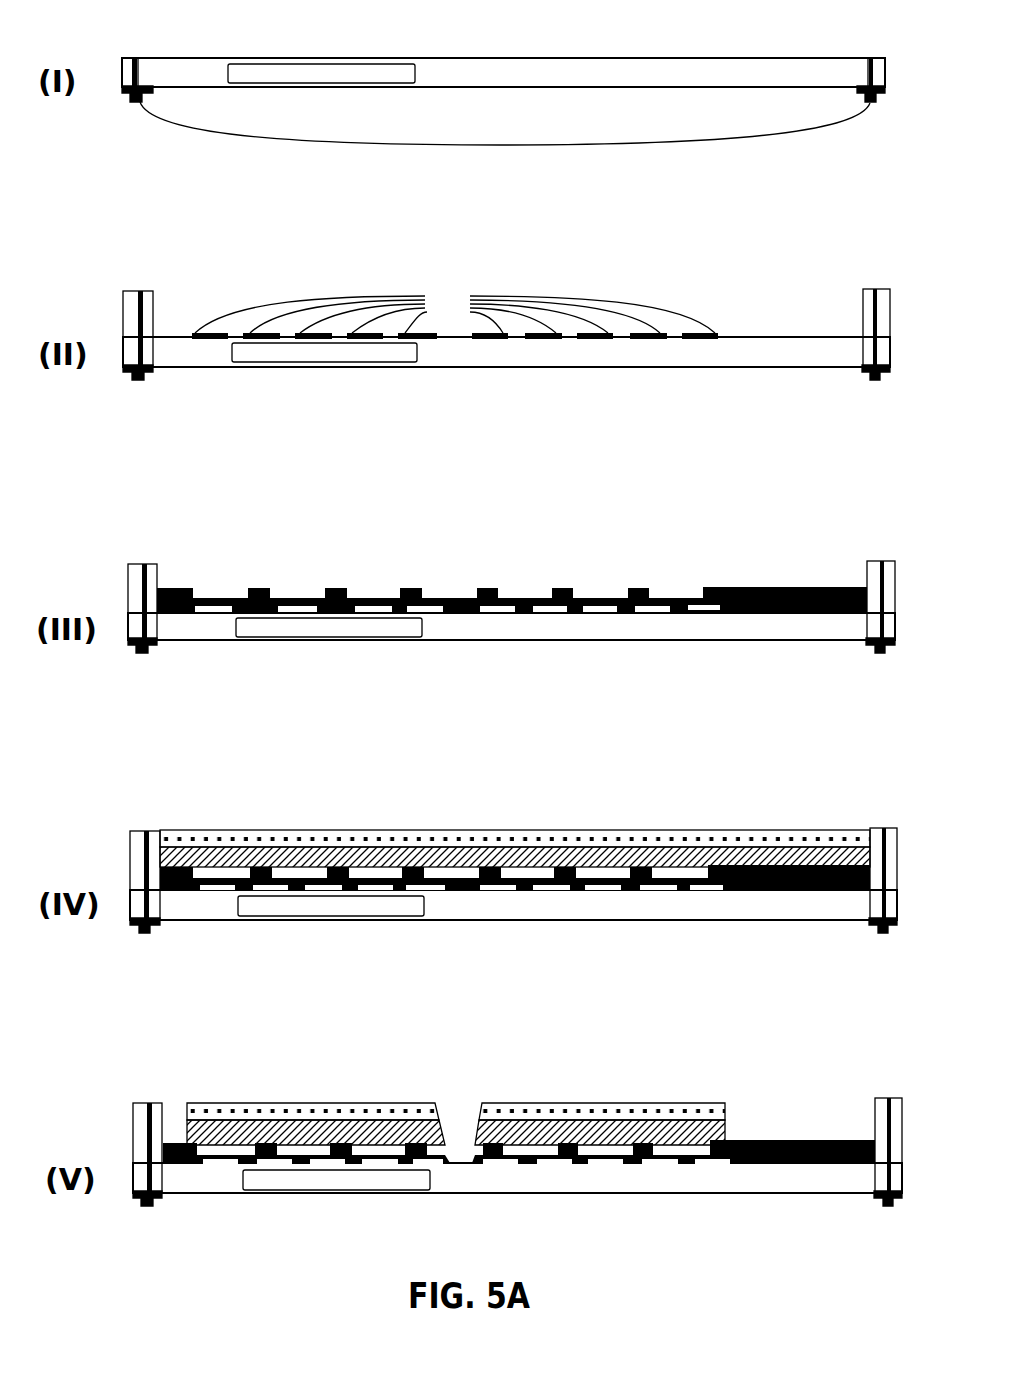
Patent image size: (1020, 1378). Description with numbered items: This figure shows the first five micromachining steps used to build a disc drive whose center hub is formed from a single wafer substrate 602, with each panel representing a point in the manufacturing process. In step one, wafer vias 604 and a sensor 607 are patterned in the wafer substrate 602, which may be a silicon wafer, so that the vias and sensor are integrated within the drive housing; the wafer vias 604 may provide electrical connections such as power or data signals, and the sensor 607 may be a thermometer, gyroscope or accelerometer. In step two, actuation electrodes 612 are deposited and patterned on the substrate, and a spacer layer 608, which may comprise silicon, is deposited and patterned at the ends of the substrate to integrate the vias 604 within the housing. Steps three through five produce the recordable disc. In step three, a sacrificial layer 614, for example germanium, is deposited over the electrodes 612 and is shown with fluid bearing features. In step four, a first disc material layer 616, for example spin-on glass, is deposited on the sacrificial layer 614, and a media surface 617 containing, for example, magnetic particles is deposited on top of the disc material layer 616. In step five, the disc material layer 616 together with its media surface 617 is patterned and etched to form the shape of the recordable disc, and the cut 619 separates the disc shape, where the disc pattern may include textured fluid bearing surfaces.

The wafer substrate 602 is at (633, 62).
The wafer vias 604 is at (505, 125).
The sensor 607 is at (330, 63).
The spacer layer 608 is at (155, 312).
The actuation electrodes 612 is at (455, 315).
The sacrificial layer 614 is at (335, 590).
The first disc material layer 616 is at (378, 856).
The media surface 617 is at (565, 836).
The separation cut 619 is at (453, 1118).